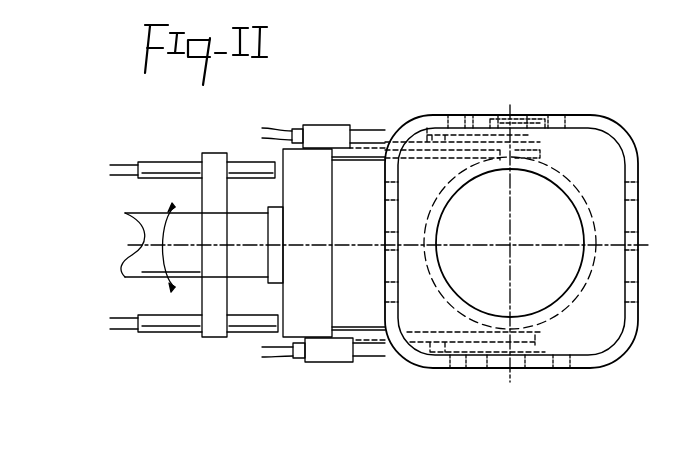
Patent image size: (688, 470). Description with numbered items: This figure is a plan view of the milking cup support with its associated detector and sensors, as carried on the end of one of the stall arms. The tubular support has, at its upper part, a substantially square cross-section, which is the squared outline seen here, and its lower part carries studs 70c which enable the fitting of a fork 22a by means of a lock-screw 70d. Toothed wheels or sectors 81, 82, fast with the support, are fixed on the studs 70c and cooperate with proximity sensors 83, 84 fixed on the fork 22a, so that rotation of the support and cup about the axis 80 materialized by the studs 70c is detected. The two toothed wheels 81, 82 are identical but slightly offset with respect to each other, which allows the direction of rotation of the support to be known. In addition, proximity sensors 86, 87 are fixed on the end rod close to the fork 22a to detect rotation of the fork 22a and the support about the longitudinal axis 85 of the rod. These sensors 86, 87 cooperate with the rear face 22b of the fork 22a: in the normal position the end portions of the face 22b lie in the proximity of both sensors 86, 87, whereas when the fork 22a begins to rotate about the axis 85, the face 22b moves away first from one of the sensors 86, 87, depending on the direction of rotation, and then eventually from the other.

The fork 22a is at (357, 330).
The rear face of fork 22b is at (311, 165).
The studs 70c is at (512, 172).
The lock-screw 70d is at (535, 116).
The axis 80 is at (508, 117).
The toothed wheel 81 is at (471, 140).
The toothed wheel 82 is at (483, 368).
The proximity sensor 83 is at (370, 135).
The proximity sensor 84 is at (367, 358).
The longitudinal axis of rod 85 is at (147, 236).
The proximity sensor 86 is at (172, 168).
The proximity sensor 87 is at (172, 326).